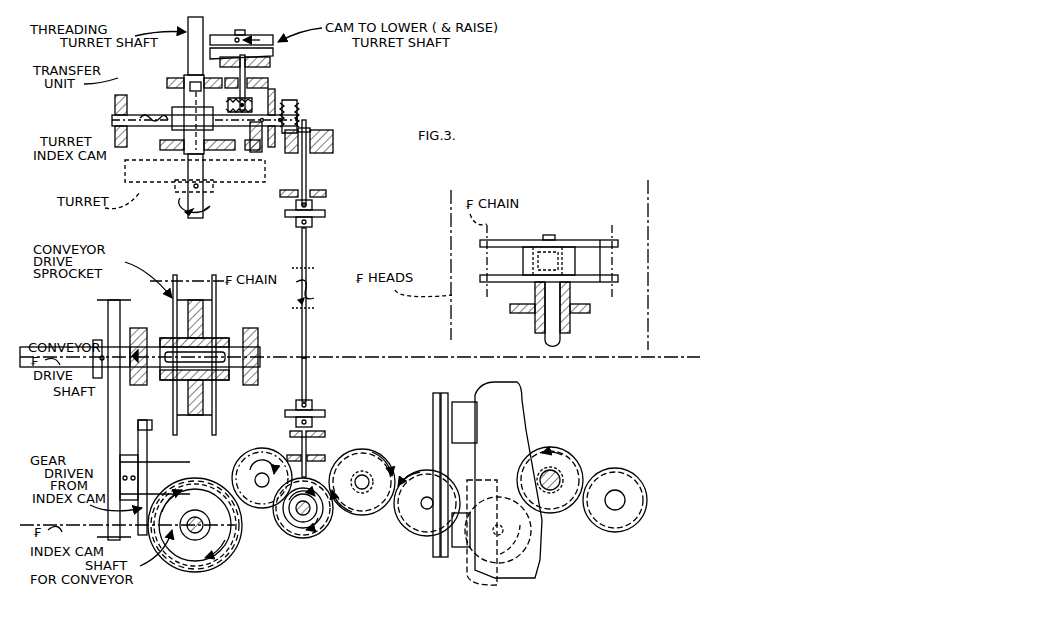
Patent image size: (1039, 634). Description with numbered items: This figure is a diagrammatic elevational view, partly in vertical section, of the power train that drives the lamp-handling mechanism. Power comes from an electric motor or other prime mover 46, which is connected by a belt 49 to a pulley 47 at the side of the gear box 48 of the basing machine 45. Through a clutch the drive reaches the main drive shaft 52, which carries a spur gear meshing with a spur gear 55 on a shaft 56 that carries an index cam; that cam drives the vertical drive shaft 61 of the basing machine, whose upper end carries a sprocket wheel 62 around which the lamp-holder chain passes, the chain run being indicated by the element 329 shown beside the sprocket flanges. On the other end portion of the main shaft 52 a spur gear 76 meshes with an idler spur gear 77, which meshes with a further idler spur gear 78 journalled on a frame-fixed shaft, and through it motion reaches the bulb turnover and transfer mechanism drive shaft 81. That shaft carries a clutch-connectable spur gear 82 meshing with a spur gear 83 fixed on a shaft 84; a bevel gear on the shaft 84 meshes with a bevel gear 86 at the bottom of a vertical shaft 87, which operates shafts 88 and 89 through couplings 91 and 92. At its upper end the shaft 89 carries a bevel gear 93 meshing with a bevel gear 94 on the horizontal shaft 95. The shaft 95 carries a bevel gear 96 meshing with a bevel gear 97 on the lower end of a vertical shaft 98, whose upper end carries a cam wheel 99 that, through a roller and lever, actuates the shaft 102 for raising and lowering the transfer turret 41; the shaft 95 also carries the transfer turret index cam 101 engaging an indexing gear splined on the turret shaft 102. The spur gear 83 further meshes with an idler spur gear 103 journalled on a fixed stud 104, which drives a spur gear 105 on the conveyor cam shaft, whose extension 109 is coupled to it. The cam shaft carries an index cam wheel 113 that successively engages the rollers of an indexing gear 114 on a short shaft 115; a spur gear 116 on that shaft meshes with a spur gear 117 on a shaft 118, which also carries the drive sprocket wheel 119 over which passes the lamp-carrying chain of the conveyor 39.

The conveyor 39 is at (172, 402).
The transfer turret 41 is at (186, 70).
The basing machine 45 is at (622, 224).
The electric motor 46 is at (478, 586).
The pulley 47 is at (475, 392).
The gear box 48 is at (506, 412).
The belt 49 is at (433, 452).
The main drive shaft 52 is at (550, 494).
The spur gear 55 is at (628, 530).
The shaft 56 is at (616, 512).
The vertical drive shaft 61 is at (560, 240).
The sprocket wheel 62 is at (540, 240).
The spur gear 76 is at (570, 466).
The idler spur gear 77 is at (530, 560).
The idler spur gear 78 is at (412, 527).
The bulb turnover and transfer mechanism drive shaft 81 is at (364, 490).
The spur gear 82 is at (384, 450).
The spur gear 83 is at (316, 534).
The shaft 84 is at (301, 513).
The bevel gear 86 is at (310, 456).
The vertical shaft 87 is at (312, 442).
The shaft 88 is at (307, 346).
The shaft 89 is at (307, 172).
The coupling 91 is at (310, 404).
The coupling 92 is at (314, 220).
The bevel gear 93 is at (306, 130).
The bevel gear 94 is at (292, 103).
The horizontal shaft 95 is at (244, 115).
The bevel gear 96 is at (255, 132).
The bevel gear 97 is at (228, 122).
The vertical shaft 98 is at (248, 78).
The cam wheel 99 is at (275, 43).
The transfer turret index cam 101 is at (185, 133).
The turret shaft 102 is at (203, 31).
The idler spur gear 103 is at (270, 466).
The fixed stud 104 is at (258, 480).
The spur gear 105 is at (226, 560).
The extension 109 is at (192, 536).
The index cam wheel 113 is at (170, 522).
The indexing gear 114 is at (150, 431).
The short shaft 115 is at (188, 458).
The spur gear 116 is at (120, 458).
The spur gear 117 is at (108, 412).
The shaft 118 is at (120, 352).
The drive sprocket wheel 119 is at (216, 323).
The chain guide 329 is at (606, 238).